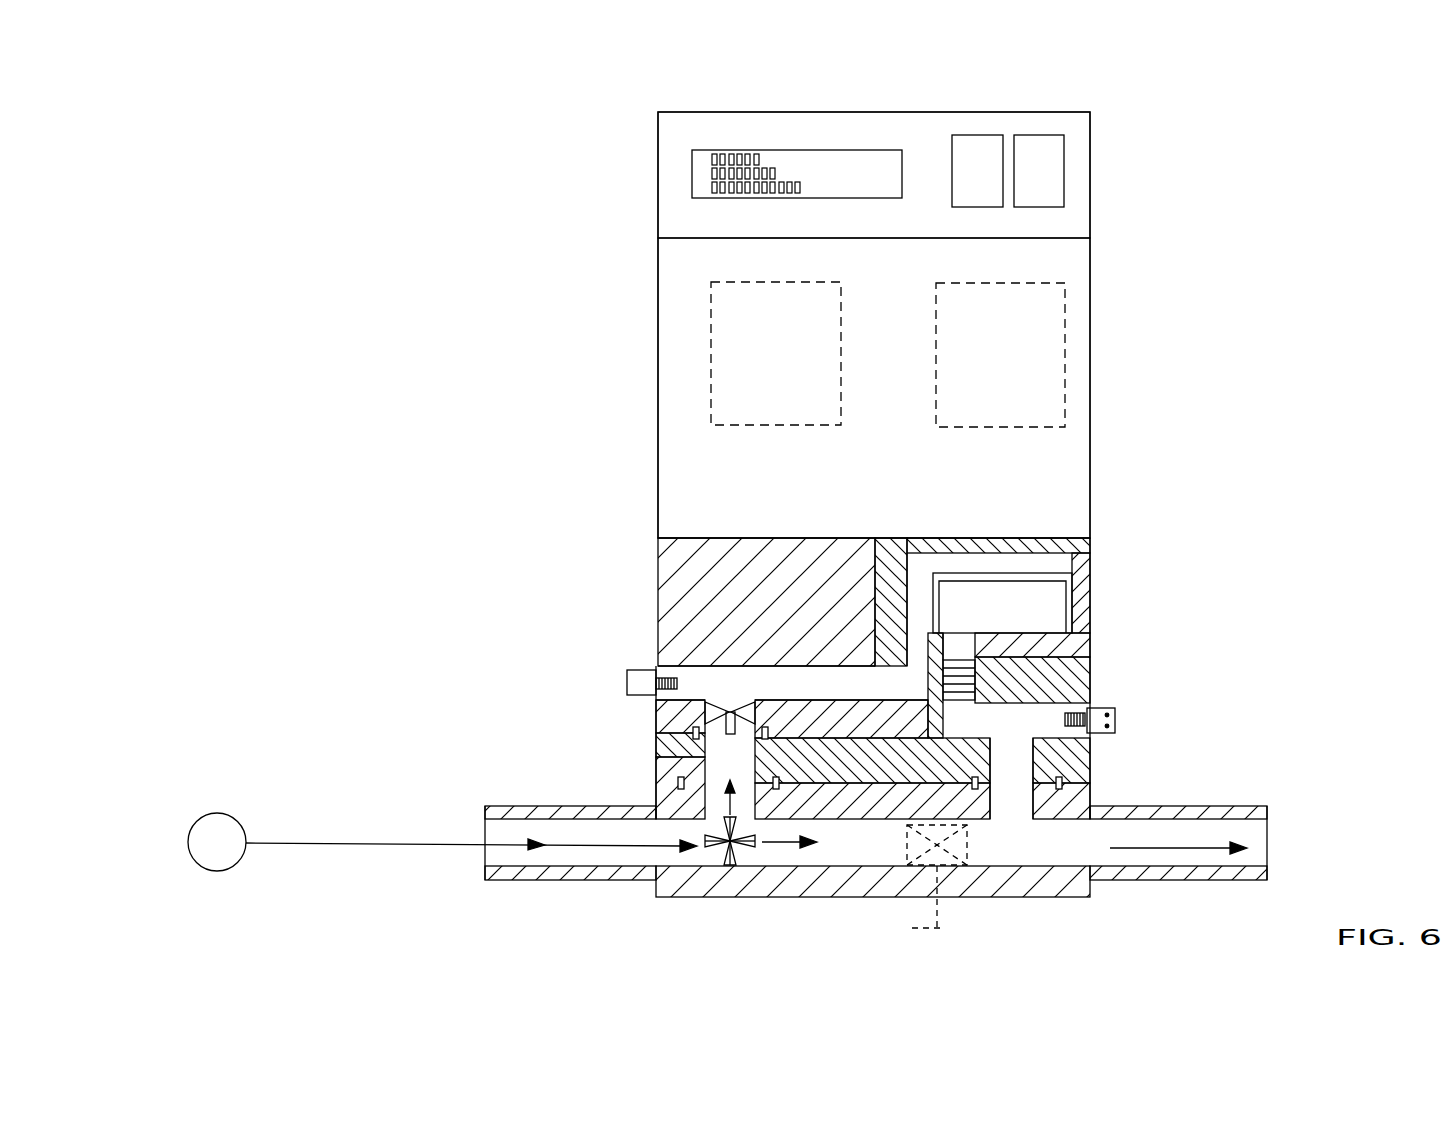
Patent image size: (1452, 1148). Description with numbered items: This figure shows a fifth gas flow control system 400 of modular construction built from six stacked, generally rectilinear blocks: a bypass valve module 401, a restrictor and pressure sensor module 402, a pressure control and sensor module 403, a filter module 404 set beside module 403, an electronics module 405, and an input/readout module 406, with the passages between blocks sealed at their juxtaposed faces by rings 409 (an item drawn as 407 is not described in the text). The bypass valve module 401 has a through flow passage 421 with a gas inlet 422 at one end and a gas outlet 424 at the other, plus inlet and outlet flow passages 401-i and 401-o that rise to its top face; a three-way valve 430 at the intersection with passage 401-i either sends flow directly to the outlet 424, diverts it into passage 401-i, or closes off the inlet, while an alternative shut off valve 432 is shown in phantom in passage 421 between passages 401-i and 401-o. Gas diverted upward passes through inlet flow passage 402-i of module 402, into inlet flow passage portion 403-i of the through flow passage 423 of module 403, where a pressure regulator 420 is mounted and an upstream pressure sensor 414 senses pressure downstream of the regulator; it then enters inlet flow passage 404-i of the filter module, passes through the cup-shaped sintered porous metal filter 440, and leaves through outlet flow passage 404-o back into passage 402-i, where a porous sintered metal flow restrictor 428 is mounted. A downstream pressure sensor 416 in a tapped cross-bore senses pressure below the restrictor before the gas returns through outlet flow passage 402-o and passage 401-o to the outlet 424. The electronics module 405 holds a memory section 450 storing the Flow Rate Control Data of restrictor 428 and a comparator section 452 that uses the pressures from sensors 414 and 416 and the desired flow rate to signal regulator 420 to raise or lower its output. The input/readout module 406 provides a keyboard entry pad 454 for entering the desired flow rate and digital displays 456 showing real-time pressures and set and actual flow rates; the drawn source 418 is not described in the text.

The gas flow control system 400 is at (616, 375).
The bypass valve module 401 is at (1090, 888).
The inlet flow passage 401-i is at (720, 815).
The outlet flow passage 401-o is at (1005, 812).
The restrictor and pressure sensor module 402 is at (1090, 757).
The inlet flow passage 402-i is at (718, 744).
The outlet flow passage 402-o is at (1024, 752).
The pressure control and sensor module 403 is at (657, 577).
The inlet flow passage portion 403-i is at (731, 706).
The filter module 404 is at (1092, 601).
The inlet flow passage 404-i is at (1030, 558).
The outlet flow passage 404-o is at (880, 637).
The electronics module 405 is at (1093, 450).
The input/readout module 406 is at (1093, 172).
The connector 407 is at (1064, 783).
The rings 409 is at (678, 783).
The upstream pressure sensor 414 is at (627, 682).
The downstream pressure sensor 416 is at (1117, 720).
The fluid source 418 is at (232, 813).
The pressure regulator 420 is at (727, 710).
The through flow passage 421 is at (903, 822).
The gas inlet 422 is at (485, 806).
The through flow passage 423 is at (905, 672).
The gas outlet 424 is at (1255, 808).
The flow restrictor 428 is at (1016, 680).
The 3-way valve 430 is at (736, 842).
The shut off valve 432 is at (950, 928).
The filter 440 is at (1080, 580).
The memory section 450 is at (776, 353).
The comparator section 452 is at (1000, 355).
The keyboard entry pad 454 is at (702, 163).
The digital displays 456 is at (1022, 134).